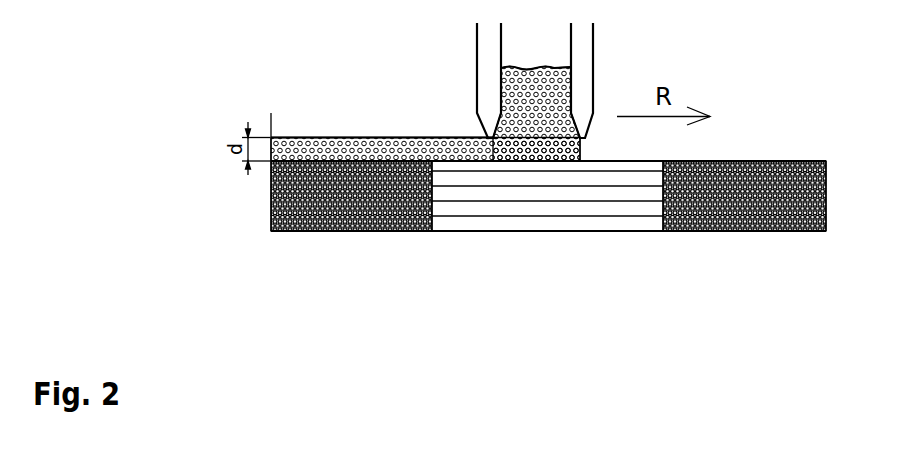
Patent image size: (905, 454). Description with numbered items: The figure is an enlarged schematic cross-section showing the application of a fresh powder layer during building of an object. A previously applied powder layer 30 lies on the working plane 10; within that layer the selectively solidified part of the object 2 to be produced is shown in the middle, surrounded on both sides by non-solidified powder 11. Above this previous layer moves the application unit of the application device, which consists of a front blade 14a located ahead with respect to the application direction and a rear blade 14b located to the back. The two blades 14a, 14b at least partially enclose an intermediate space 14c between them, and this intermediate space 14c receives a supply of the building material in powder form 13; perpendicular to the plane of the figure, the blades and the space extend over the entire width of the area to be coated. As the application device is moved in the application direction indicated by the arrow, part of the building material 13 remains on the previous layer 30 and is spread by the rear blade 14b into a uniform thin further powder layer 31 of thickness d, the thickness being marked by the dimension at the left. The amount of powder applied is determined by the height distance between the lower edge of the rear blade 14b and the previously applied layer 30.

The object 2 is at (528, 207).
The working plane 10 is at (757, 159).
The non-solidified powder 11 is at (327, 215).
The building material in powder form 13 is at (485, 135).
The front blade 14a is at (582, 117).
The rear blade 14b is at (480, 100).
The intermediate space 14c is at (532, 38).
The powder layer 30 is at (270, 220).
The powder layer 31 is at (297, 137).